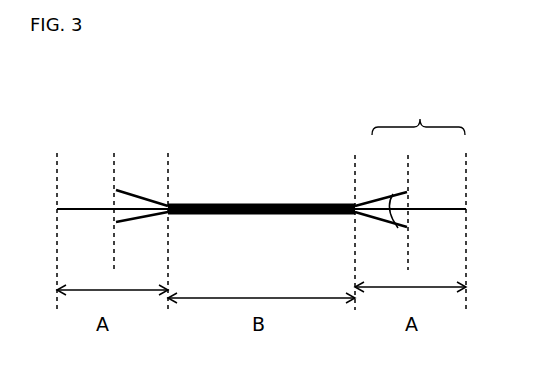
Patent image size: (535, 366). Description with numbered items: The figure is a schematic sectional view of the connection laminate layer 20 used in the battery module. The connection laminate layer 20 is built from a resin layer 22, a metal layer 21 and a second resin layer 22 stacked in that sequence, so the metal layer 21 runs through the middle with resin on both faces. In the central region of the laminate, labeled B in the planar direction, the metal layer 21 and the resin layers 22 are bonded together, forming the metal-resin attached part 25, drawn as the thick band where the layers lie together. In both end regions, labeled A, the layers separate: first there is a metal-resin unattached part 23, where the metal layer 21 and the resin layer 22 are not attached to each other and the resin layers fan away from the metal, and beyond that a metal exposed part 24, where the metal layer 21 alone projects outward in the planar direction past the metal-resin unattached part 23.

The connection laminate layer 20 is at (418, 111).
The metal layer 21 is at (426, 209).
The resin layer 22 is at (372, 198).
The metal-resin unattached part 23 is at (261, 225).
The metal exposed part 24 is at (261, 225).
The metal-resin attached part 25 is at (261, 227).